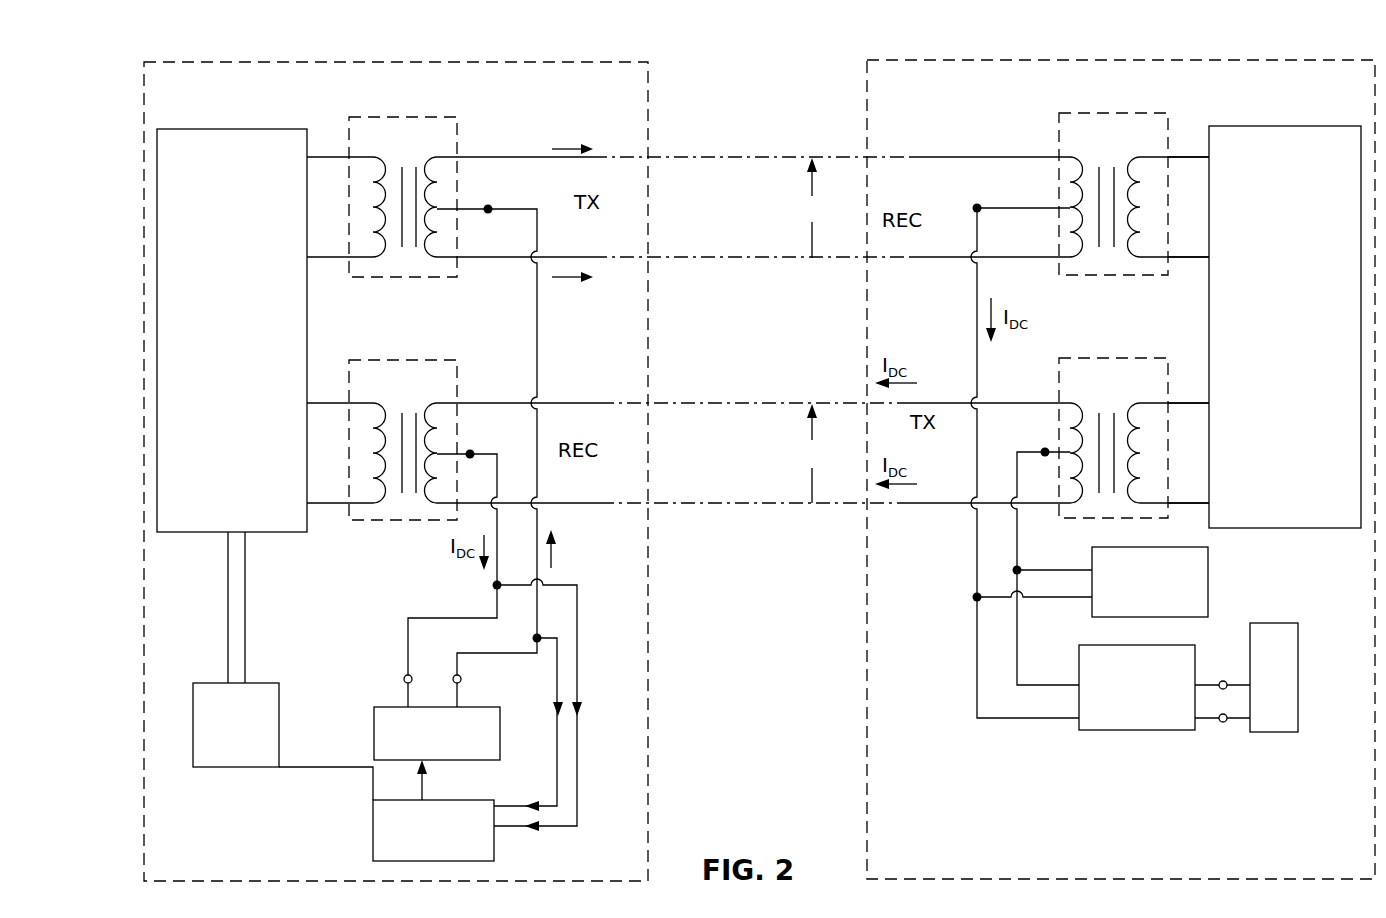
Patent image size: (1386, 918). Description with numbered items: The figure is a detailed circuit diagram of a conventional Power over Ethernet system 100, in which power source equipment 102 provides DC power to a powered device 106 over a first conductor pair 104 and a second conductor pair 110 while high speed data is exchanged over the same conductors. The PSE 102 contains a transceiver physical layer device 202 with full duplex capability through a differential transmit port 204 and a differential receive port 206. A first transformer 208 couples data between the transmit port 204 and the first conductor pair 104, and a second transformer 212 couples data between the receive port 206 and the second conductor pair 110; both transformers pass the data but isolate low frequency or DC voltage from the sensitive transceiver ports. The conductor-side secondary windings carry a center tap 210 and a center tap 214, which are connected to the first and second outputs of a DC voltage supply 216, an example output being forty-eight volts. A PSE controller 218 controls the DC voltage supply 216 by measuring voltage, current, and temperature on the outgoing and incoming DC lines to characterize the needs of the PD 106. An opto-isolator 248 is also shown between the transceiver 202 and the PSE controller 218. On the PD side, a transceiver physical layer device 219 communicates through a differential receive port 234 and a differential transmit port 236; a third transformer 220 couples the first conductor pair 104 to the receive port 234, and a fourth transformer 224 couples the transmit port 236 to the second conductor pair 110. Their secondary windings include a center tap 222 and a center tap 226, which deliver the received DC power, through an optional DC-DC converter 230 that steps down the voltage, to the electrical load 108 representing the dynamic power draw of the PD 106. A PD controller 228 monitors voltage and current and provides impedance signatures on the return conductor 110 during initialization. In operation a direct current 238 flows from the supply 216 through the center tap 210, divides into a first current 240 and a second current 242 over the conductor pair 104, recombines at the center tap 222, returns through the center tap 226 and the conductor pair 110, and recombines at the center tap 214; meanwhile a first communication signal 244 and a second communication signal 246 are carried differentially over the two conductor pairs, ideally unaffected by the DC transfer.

The Power over Ethernet system 100 is at (738, 100).
The power source equipment 102 is at (373, 62).
The first conductor pair 104 is at (716, 225).
The powered device 106 is at (1140, 60).
The electrical load 108 is at (1298, 660).
The second conductor pair 110 is at (716, 470).
The transceiver physical layer device 202 is at (232, 406).
The differential transmit port 204 is at (307, 207).
The differential receive port 206 is at (307, 437).
The first transformer 208 is at (471, 197).
The center tap 210 is at (488, 209).
The second transformer 212 is at (474, 440).
The center tap 214 is at (470, 454).
The DC voltage supply 216 is at (374, 725).
The PSE controller 218 is at (373, 838).
The transceiver physical layer device 219 is at (1285, 327).
The third transformer 220 is at (1059, 194).
The center tap 222 is at (977, 208).
The fourth transformer 224 is at (1059, 438).
The center tap 226 is at (1045, 452).
The PD controller 228 is at (1208, 578).
The DC-DC converter 230 is at (1113, 740).
The differential receive port 234 is at (1209, 200).
The differential transmit port 236 is at (1209, 428).
The direct current 238 is at (571, 556).
The first current 240 is at (557, 123).
The second current 242 is at (580, 316).
The first communication signal 244 is at (812, 208).
The second communication signal 246 is at (812, 453).
The opto-isolator 248 is at (258, 683).